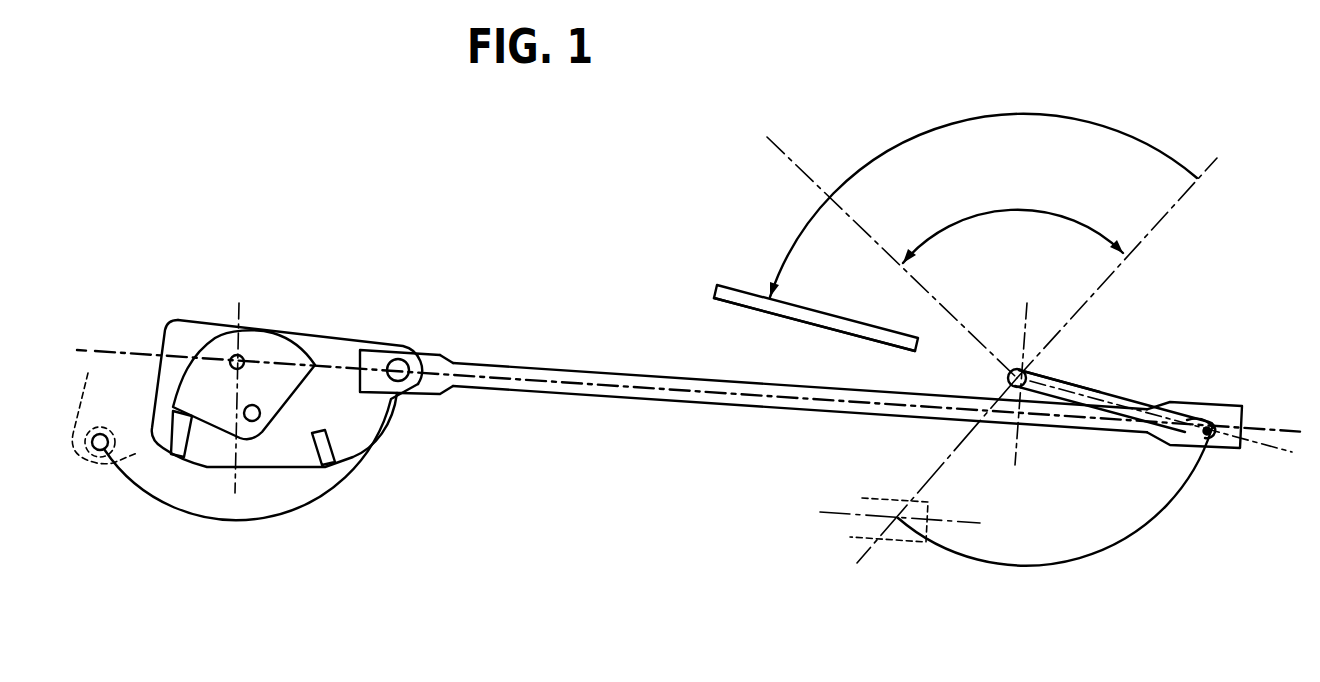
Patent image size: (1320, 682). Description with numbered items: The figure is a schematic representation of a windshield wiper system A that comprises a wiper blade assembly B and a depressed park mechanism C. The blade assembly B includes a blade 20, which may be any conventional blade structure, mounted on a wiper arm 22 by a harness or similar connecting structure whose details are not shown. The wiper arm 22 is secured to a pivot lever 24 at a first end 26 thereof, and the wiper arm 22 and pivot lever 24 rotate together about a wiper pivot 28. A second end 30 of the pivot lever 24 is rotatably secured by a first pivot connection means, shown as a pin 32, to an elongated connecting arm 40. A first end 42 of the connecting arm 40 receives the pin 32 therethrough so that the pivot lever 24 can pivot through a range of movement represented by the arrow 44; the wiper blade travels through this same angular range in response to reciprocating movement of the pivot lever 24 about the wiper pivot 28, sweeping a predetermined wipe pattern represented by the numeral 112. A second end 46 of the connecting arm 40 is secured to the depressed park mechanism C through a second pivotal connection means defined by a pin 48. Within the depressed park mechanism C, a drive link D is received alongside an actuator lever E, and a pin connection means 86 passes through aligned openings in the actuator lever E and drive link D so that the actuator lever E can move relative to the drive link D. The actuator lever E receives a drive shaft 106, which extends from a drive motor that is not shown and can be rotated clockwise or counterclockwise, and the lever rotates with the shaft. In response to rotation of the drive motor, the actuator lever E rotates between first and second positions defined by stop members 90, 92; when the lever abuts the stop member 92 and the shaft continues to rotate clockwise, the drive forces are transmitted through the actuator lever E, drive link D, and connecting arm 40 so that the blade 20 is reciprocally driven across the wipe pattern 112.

The blade 20 is at (742, 292).
The wiper arm 22 is at (930, 357).
The pivot lever 24 is at (1122, 376).
The first end 26 is at (1053, 375).
The wiper pivot 28 is at (1025, 372).
The second end 30 is at (1187, 420).
The first pivot connection means 32 is at (1205, 450).
The elongated connecting arm 40 is at (686, 410).
The first end 42 is at (883, 503).
The arrow 44 is at (1082, 573).
The second end 46 is at (438, 358).
The pin 48 is at (402, 365).
The pin connection means 86 is at (250, 421).
The stop member 90 is at (180, 443).
The stop member 92 is at (326, 461).
The drive shaft 106 is at (237, 354).
The wipe pattern 112 is at (940, 227).
The windshield wiper system A is at (512, 225).
The wiper blade assembly B is at (840, 459).
The depressed park mechanism C is at (92, 536).
The drive link D is at (170, 313).
The actuator lever E is at (290, 346).